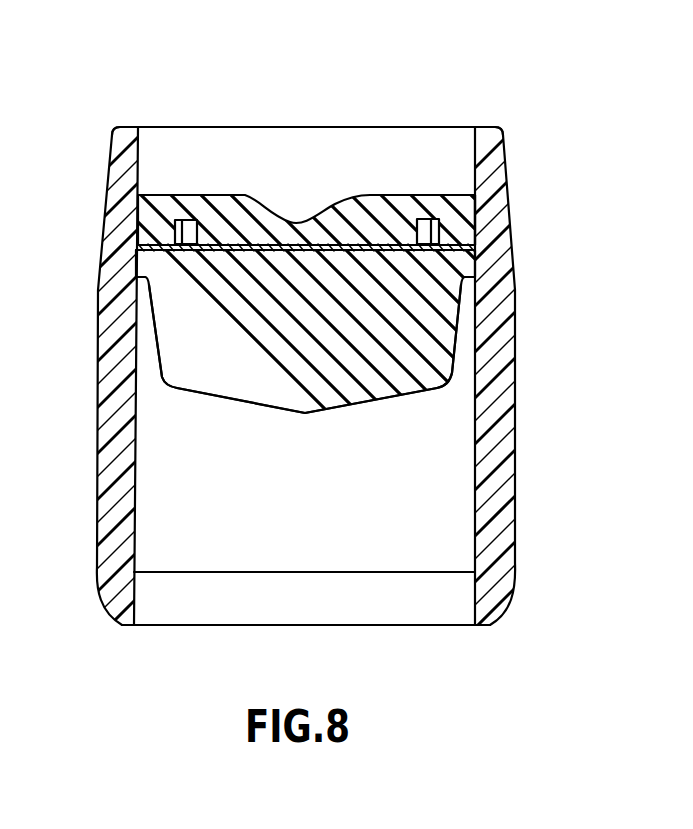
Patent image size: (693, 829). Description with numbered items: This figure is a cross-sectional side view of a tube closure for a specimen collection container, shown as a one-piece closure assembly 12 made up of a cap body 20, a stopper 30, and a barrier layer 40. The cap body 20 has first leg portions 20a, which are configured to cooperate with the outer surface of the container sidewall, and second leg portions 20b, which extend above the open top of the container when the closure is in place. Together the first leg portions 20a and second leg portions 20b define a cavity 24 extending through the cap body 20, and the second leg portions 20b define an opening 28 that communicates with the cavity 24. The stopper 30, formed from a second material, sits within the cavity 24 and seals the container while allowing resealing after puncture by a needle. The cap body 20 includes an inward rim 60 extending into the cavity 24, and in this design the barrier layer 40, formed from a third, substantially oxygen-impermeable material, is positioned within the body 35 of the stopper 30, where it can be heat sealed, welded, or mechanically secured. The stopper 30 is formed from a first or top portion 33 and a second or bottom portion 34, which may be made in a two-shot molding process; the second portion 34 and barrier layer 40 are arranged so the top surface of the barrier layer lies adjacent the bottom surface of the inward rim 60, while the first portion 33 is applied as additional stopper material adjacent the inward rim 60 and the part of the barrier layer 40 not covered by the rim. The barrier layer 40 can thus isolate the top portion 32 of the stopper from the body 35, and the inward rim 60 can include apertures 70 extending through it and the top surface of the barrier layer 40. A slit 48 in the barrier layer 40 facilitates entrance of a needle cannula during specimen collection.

The closure assembly 12 is at (586, 209).
The cap body 20 is at (103, 415).
The first leg portions 20a is at (107, 527).
The second leg portions 20b is at (125, 148).
The cavity 24 is at (292, 112).
The opening 28 is at (258, 164).
The stopper 30 is at (170, 323).
The top portion of the stopper 32 is at (237, 217).
The first portion of the stopper 33 is at (397, 210).
The second portion of the stopper 34 is at (183, 366).
The body of the stopper 35 is at (207, 274).
The barrier layer 40 is at (363, 238).
The slit 48 is at (299, 250).
The inward rim 60 is at (175, 226).
The apertures 70 is at (468, 201).